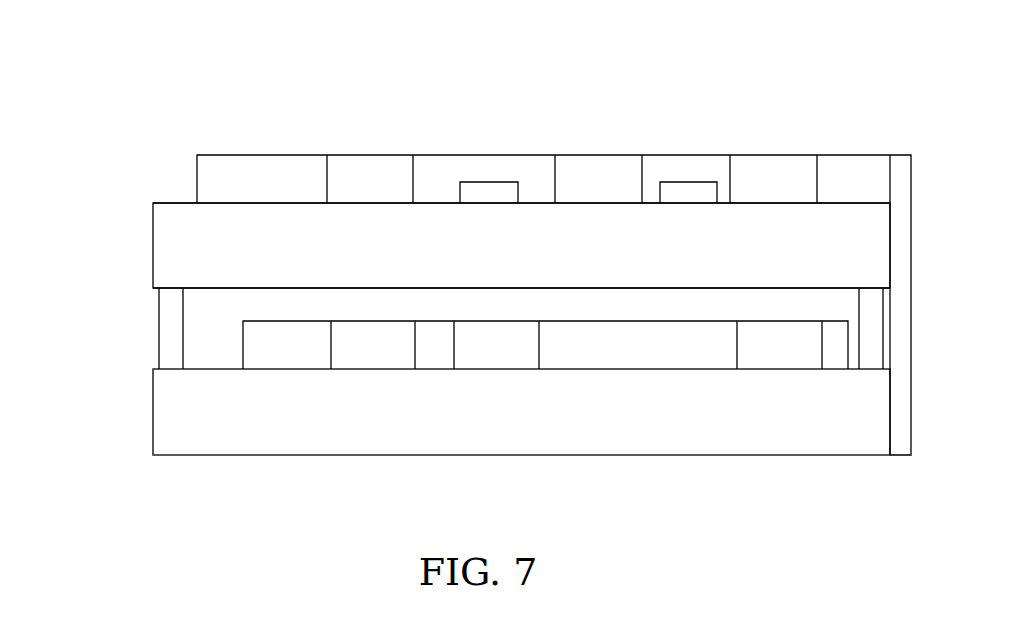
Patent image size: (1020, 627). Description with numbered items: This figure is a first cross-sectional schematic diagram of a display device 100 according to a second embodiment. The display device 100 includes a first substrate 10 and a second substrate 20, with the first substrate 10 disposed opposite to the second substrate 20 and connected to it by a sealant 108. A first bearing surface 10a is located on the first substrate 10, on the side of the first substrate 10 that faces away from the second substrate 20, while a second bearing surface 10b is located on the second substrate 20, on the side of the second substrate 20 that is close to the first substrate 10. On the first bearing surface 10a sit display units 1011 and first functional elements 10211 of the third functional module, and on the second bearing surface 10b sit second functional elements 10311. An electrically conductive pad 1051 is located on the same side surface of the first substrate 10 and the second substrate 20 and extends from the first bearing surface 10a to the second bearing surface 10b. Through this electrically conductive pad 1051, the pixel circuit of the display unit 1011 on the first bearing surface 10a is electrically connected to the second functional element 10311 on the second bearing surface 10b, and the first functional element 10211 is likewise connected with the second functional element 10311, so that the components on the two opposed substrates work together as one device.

The display device 100 is at (520, 77).
The first substrate 10 is at (172, 253).
The first bearing surface 10a is at (214, 202).
The second bearing surface 10b is at (235, 368).
The display unit 1011 is at (365, 165).
The first functional element 10211 is at (490, 190).
The sealant 108 is at (172, 329).
The second substrate 20 is at (172, 416).
The second functional element 10311 is at (362, 352).
The electrically conductive pad 1051 is at (905, 375).